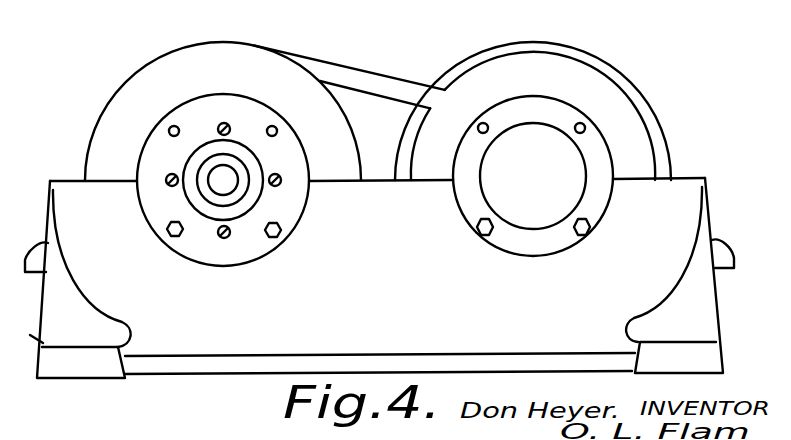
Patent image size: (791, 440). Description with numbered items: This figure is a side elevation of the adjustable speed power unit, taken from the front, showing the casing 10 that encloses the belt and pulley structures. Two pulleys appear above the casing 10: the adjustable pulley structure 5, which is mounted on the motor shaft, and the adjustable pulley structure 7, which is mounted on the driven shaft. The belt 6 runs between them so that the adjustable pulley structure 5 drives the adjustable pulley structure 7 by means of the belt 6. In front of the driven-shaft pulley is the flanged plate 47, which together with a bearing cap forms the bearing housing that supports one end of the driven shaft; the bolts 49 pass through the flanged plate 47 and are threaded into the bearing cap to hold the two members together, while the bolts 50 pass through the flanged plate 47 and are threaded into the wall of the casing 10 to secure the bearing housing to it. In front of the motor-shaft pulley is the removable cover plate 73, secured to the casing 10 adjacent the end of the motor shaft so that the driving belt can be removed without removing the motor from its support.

The adjustable pulley structure 5 is at (647, 138).
The belt 6 is at (371, 73).
The adjustable pulley structure 7 is at (105, 103).
The casing 10 is at (716, 297).
The flanged plate 47 is at (298, 203).
The bolts 49 is at (221, 238).
The bolts 50 is at (277, 236).
The removable cover plate 73 is at (604, 215).